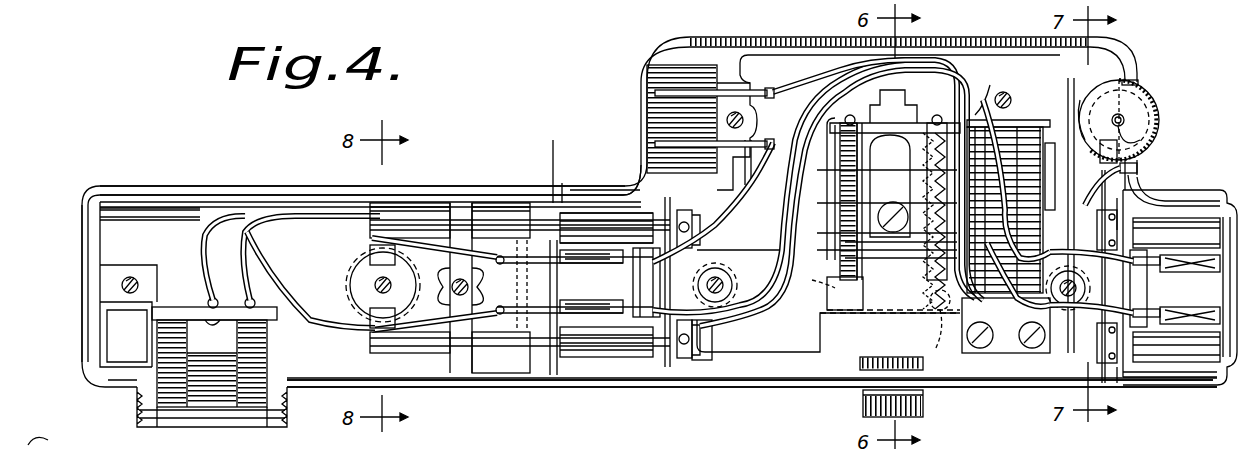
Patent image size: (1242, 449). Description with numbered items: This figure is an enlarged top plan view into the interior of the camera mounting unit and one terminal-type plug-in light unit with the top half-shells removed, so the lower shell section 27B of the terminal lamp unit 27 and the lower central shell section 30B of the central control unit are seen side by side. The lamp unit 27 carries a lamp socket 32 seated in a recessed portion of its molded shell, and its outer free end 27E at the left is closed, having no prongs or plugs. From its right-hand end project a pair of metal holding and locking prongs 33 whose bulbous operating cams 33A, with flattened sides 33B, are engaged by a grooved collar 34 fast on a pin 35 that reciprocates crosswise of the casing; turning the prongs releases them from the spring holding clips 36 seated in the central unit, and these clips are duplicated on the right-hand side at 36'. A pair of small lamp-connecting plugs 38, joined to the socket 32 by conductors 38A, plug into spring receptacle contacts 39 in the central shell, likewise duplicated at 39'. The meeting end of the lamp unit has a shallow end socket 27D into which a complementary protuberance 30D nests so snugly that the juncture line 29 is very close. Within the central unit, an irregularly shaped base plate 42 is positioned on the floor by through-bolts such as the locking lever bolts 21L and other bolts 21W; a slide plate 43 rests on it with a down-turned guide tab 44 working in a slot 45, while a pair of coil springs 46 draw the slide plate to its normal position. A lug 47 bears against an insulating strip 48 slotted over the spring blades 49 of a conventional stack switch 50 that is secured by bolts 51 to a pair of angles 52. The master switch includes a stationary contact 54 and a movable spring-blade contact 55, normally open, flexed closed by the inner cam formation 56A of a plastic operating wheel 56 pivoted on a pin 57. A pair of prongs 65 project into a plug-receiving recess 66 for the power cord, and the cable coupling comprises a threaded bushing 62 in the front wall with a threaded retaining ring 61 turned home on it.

The terminal lamp unit 27 is at (292, 185).
The lower shell section 27B is at (150, 186).
The shallow end socket 27D is at (553, 200).
The outer free end 27E is at (84, 200).
The meeting juncture line 29 is at (565, 380).
The lower central shell section 30B is at (578, 193).
The complementary protuberance 30D is at (565, 212).
The lamp socket 32 is at (220, 390).
The holding and locking prongs 33 is at (420, 225).
The operating cams 33A is at (380, 252).
The flattened sides 33B is at (710, 238).
The grooved collar 34 is at (365, 272).
The pin 35 is at (375, 285).
The spring holding clips 36 is at (719, 339).
The spring holding clips 36' is at (1158, 291).
The lamp-connecting plugs 38 is at (535, 306).
The conductors 38A is at (200, 230).
The spring receptacle contacts 39 is at (605, 307).
The spring receptacle contacts 39' is at (1140, 289).
The base plate 42 is at (803, 341).
The slide plate 43 is at (910, 294).
The guide tab 44 is at (900, 118).
The slot / lug 45 is at (862, 345).
The coil springs 46 is at (868, 320).
The lug 47 is at (845, 260).
The insulating strip 48 is at (845, 242).
The spring blades 49 is at (853, 173).
The stack switch 50 is at (1030, 140).
The bolts 51 is at (1000, 118).
The angles 52 is at (1040, 145).
The stationary contact 54 is at (1062, 200).
The movable spring-blade contact 55 is at (1138, 168).
The operating wheel 56 is at (1150, 102).
The inner cam formation 56A is at (1085, 100).
The pin 57 is at (1140, 140).
The threaded retaining ring 61 is at (925, 405).
The threaded bushing 62 is at (880, 364).
The prongs 65 is at (707, 97).
The plug-receiving recess 66 is at (660, 78).
The locking lever bolts 21L is at (722, 292).
The bolts 21W is at (1000, 95).